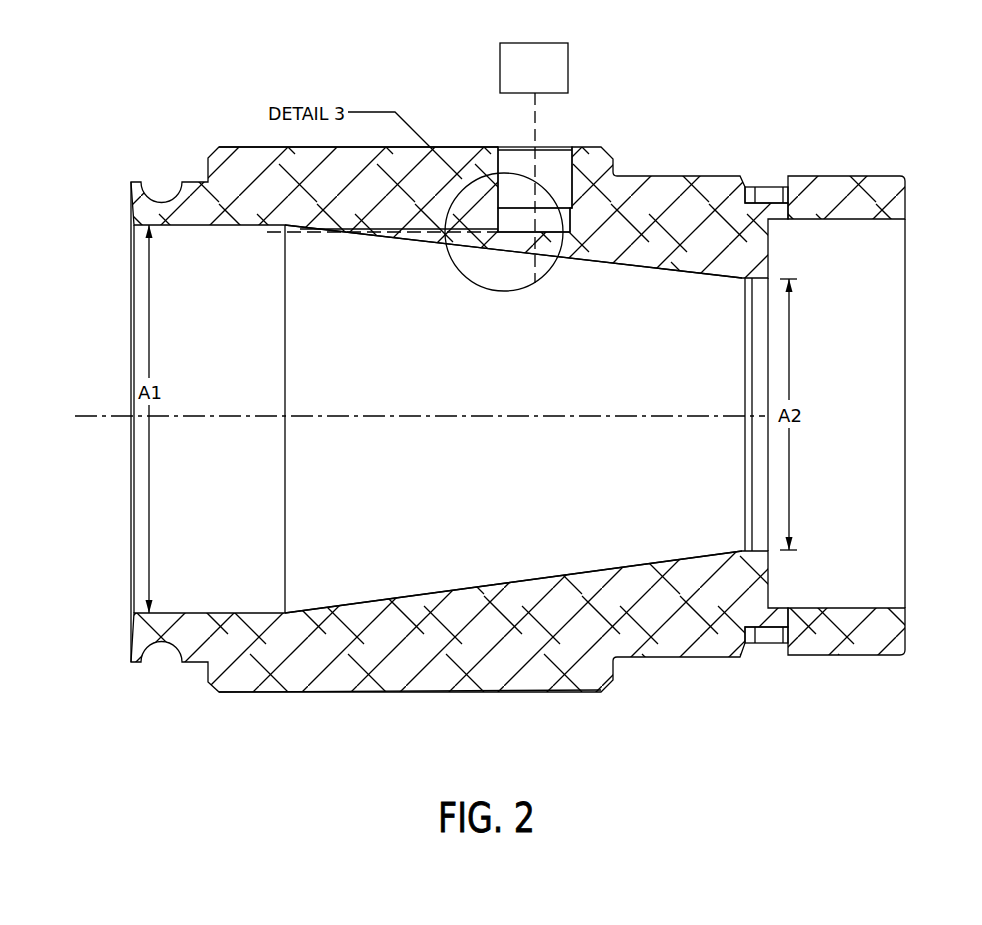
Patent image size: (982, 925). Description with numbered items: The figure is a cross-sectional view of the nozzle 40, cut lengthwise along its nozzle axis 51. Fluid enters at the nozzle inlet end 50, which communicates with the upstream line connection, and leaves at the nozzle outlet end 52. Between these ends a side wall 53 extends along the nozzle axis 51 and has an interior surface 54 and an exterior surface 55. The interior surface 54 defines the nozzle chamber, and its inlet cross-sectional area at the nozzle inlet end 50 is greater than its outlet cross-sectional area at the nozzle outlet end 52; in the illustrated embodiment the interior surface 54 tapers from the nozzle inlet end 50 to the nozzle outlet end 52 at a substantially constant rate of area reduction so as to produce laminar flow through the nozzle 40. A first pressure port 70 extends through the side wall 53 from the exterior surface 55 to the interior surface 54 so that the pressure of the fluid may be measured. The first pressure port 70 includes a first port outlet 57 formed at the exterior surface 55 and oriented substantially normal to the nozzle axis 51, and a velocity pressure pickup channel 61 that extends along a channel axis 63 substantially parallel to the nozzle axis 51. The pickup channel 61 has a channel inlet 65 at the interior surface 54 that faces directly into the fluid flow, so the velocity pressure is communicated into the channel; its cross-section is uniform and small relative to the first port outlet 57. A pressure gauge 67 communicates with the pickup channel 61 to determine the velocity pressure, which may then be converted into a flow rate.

The nozzle 40 is at (838, 158).
The nozzle inlet end 50 is at (131, 573).
The nozzle axis 51 is at (95, 412).
The nozzle outlet end 52 is at (905, 415).
The side wall 53 is at (542, 672).
The interior surface 54 is at (465, 590).
The exterior surface 55 is at (415, 692).
The first port outlet 57 is at (498, 147).
The velocity pressure pickup channel 61 is at (433, 240).
The channel axis 63 is at (395, 237).
The channel inlet 65 is at (362, 237).
The pressure gauge 67 is at (568, 66).
The first pressure port 70 is at (563, 148).